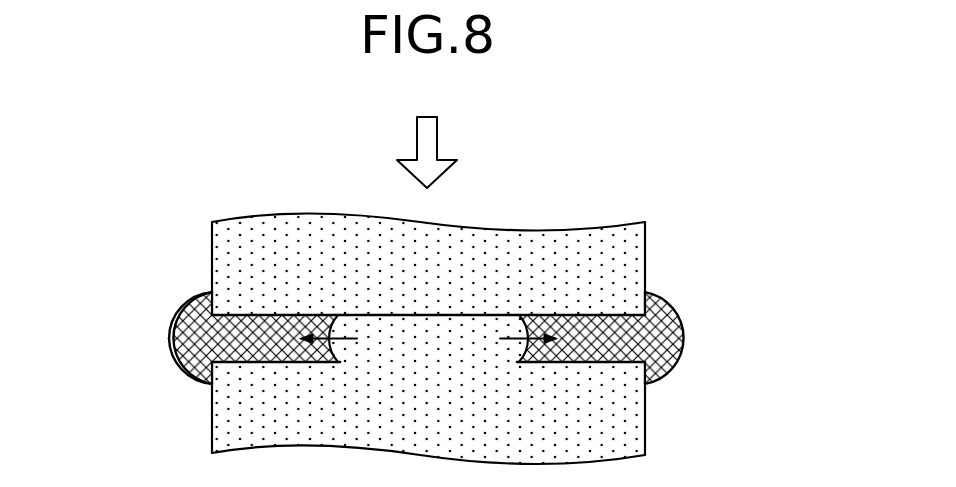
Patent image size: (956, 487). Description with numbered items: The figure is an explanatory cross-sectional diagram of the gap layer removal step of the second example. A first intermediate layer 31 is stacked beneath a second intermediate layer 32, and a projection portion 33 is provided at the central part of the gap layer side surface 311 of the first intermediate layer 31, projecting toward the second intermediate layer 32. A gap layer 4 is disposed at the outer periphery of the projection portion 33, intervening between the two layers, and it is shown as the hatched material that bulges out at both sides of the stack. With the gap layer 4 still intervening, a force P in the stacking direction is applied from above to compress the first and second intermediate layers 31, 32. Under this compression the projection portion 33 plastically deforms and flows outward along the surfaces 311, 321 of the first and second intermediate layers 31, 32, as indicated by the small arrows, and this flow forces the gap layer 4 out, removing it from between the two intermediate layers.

The second intermediate layer 32 is at (615, 268).
The first intermediate layer 31 is at (620, 422).
The gap layer 4 is at (668, 338).
The projection portion 33 is at (397, 325).
The surface of the second intermediate layer 321 is at (174, 329).
The gap layer side surface 311 is at (176, 358).
The force P is at (428, 138).